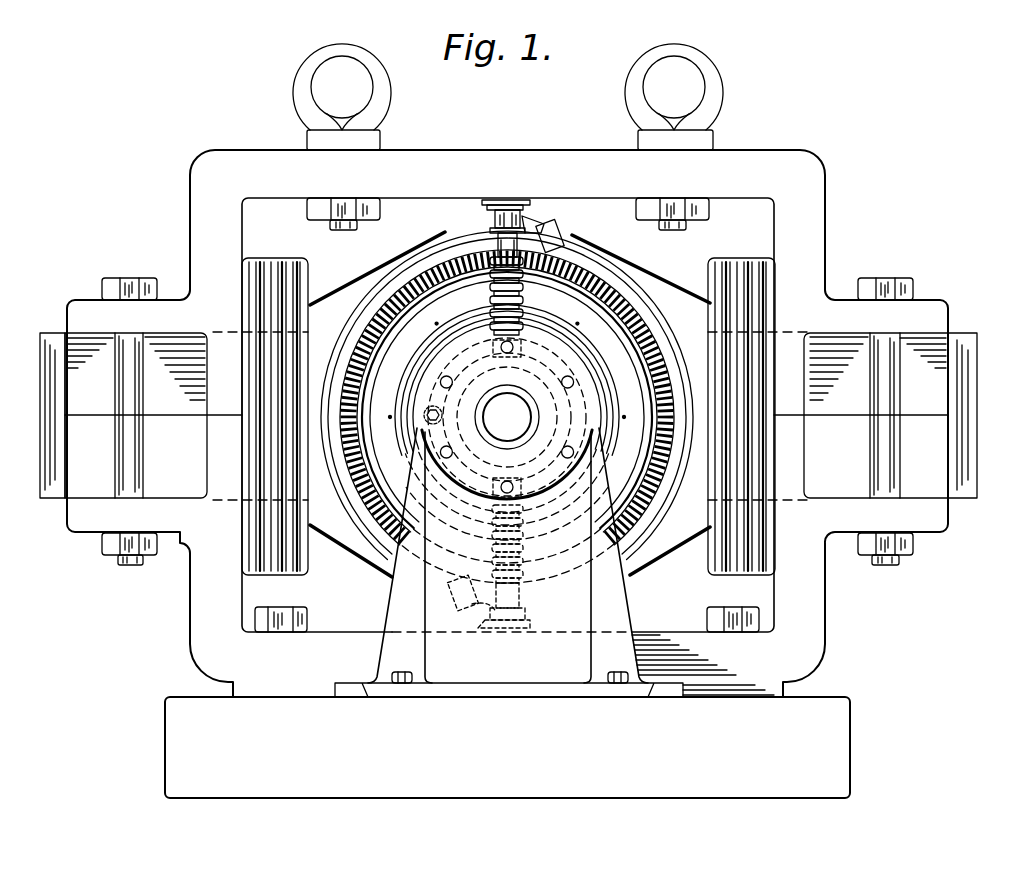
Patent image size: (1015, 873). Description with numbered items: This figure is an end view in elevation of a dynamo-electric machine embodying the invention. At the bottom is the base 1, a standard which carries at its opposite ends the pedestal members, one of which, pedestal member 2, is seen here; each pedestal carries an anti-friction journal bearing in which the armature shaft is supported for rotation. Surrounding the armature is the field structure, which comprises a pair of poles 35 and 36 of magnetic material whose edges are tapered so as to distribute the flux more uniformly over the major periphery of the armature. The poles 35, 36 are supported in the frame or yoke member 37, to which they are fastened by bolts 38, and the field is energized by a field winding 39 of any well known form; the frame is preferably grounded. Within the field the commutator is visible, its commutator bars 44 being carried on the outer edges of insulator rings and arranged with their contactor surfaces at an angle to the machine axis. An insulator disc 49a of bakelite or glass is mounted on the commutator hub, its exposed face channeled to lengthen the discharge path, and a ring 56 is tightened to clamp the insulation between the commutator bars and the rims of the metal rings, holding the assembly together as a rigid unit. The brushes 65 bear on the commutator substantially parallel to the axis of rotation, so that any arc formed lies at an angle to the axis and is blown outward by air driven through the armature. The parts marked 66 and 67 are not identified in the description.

The base 1 is at (843, 748).
The pedestal member 2 is at (403, 605).
The pole 35 is at (337, 310).
The pole 36 is at (657, 295).
The frame or yoke member 37 is at (812, 215).
The bolts 38 is at (890, 278).
The field winding 39 is at (253, 558).
The commutator bars 44 is at (612, 527).
The insulator disc 49a is at (583, 347).
The ring 56 is at (460, 312).
The brushes 65 is at (553, 238).
The lower adjusting screw 66 is at (435, 597).
The upper adjusting screw 67 is at (492, 280).